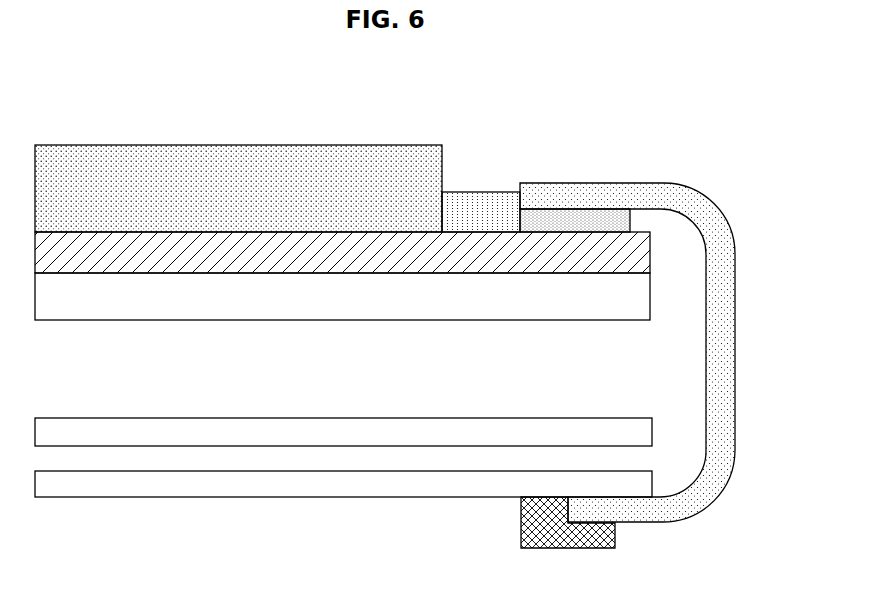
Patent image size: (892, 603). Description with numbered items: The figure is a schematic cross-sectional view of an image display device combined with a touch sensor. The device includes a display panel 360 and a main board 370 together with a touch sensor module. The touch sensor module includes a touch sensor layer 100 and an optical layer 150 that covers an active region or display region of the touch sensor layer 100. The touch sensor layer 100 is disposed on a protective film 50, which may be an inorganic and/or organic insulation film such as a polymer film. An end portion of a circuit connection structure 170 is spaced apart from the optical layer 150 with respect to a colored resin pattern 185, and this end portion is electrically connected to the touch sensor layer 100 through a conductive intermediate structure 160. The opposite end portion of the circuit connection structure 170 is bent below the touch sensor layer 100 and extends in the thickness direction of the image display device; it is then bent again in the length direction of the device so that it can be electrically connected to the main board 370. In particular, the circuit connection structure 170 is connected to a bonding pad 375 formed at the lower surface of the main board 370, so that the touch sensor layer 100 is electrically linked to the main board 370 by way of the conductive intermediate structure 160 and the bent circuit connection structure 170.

The protective film 50 is at (135, 308).
The touch sensor layer 100 is at (330, 258).
The optical layer 150 is at (252, 163).
The conductive intermediate structure 160 is at (572, 225).
The circuit connection structure 170 is at (603, 193).
The colored resin pattern 185 is at (487, 200).
The display panel 360 is at (180, 435).
The main board 370 is at (308, 485).
The bonding pad 375 is at (520, 528).